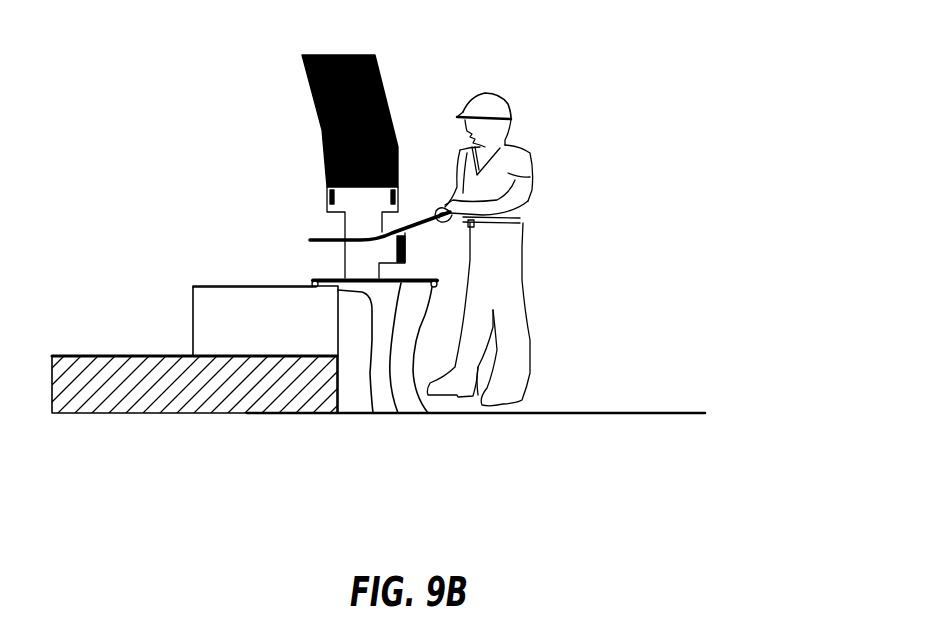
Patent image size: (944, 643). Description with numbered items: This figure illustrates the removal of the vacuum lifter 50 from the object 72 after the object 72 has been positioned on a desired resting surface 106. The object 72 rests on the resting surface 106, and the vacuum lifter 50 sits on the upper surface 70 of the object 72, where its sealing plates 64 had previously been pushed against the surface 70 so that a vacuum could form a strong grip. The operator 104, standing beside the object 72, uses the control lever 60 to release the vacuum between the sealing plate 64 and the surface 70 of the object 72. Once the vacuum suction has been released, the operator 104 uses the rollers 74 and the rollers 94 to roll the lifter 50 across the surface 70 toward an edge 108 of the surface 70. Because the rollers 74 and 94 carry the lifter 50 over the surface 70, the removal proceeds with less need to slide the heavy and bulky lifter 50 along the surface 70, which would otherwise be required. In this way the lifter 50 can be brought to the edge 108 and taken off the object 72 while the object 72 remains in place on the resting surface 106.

The vacuum lifter 50 is at (190, 126).
The control lever 60 is at (413, 232).
The sealing plates 64 is at (398, 413).
The surface 70 is at (223, 287).
The object 72 is at (280, 329).
The rollers 74 is at (313, 282).
The rollers 94 is at (428, 413).
The operator 104 is at (530, 193).
The resting surface 106 is at (146, 355).
The edge 108 is at (373, 413).